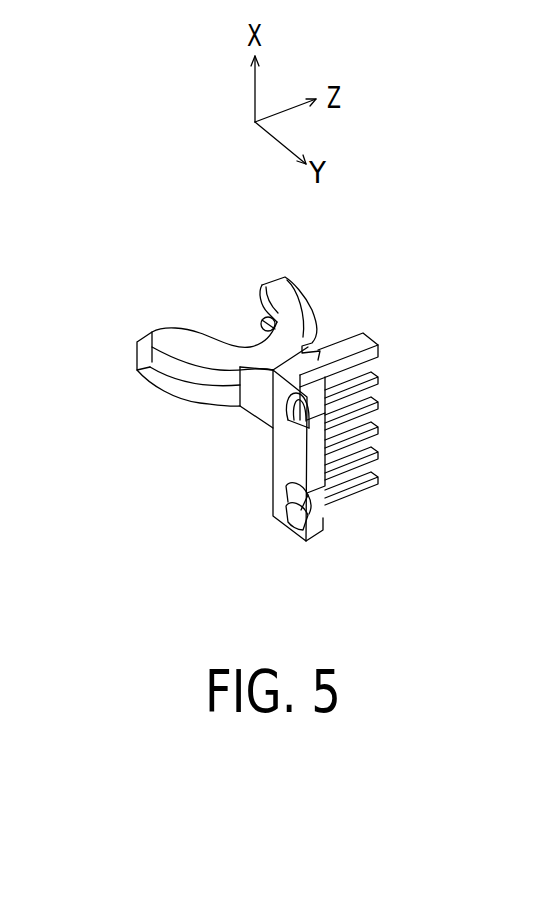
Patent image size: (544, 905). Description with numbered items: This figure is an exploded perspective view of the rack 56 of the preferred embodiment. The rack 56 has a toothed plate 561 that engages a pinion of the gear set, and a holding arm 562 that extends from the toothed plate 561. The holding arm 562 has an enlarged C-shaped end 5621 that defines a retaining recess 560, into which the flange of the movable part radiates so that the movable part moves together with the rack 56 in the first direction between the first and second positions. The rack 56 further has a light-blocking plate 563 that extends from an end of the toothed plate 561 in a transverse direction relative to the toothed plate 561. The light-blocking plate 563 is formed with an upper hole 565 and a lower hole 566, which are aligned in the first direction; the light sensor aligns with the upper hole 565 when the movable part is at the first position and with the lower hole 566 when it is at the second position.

The rack 56 is at (227, 463).
The retaining recess 560 is at (262, 320).
The toothed plate 561 is at (380, 405).
The holding arm 562 is at (286, 358).
The enlarged C-shaped end 5621 is at (190, 385).
The light-blocking plate 563 is at (282, 453).
The upper hole 565 is at (296, 405).
The lower hole 566 is at (318, 510).